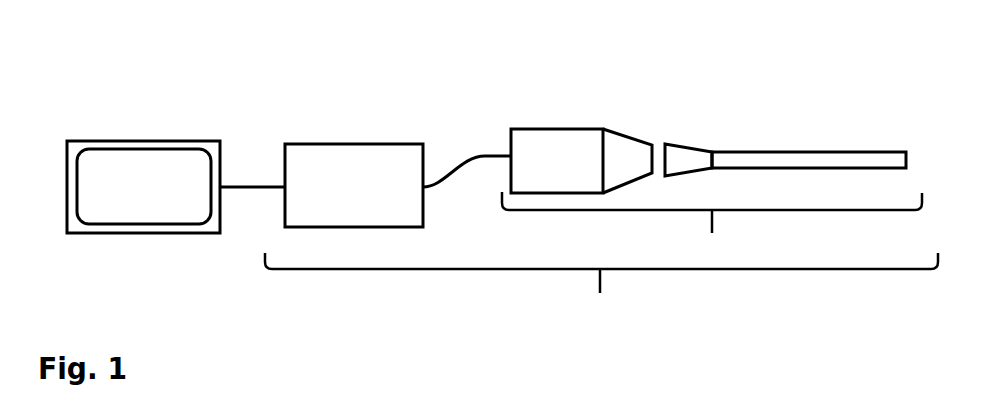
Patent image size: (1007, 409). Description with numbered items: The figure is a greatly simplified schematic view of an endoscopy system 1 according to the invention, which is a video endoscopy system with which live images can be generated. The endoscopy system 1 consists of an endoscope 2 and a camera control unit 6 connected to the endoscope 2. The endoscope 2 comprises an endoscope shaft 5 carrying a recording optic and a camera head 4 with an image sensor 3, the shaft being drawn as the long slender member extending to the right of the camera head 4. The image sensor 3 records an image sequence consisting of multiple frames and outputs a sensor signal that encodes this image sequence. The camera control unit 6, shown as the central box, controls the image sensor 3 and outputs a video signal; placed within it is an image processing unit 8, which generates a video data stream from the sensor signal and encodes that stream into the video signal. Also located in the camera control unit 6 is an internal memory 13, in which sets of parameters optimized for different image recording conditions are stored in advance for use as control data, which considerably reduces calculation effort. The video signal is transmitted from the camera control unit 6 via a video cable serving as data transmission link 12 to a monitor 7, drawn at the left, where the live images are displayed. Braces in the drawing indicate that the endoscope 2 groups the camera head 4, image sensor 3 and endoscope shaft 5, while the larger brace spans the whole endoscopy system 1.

The endoscopy system 1 is at (601, 290).
The endoscope 2 is at (712, 230).
The image sensor 3 is at (636, 155).
The camera head 4 is at (566, 163).
The endoscope shaft 5 is at (810, 160).
The camera control unit 6 is at (363, 180).
The monitor 7 is at (147, 178).
The image processing unit 8 is at (315, 178).
The data transmission link 12 is at (265, 187).
The internal memory 13 is at (400, 185).